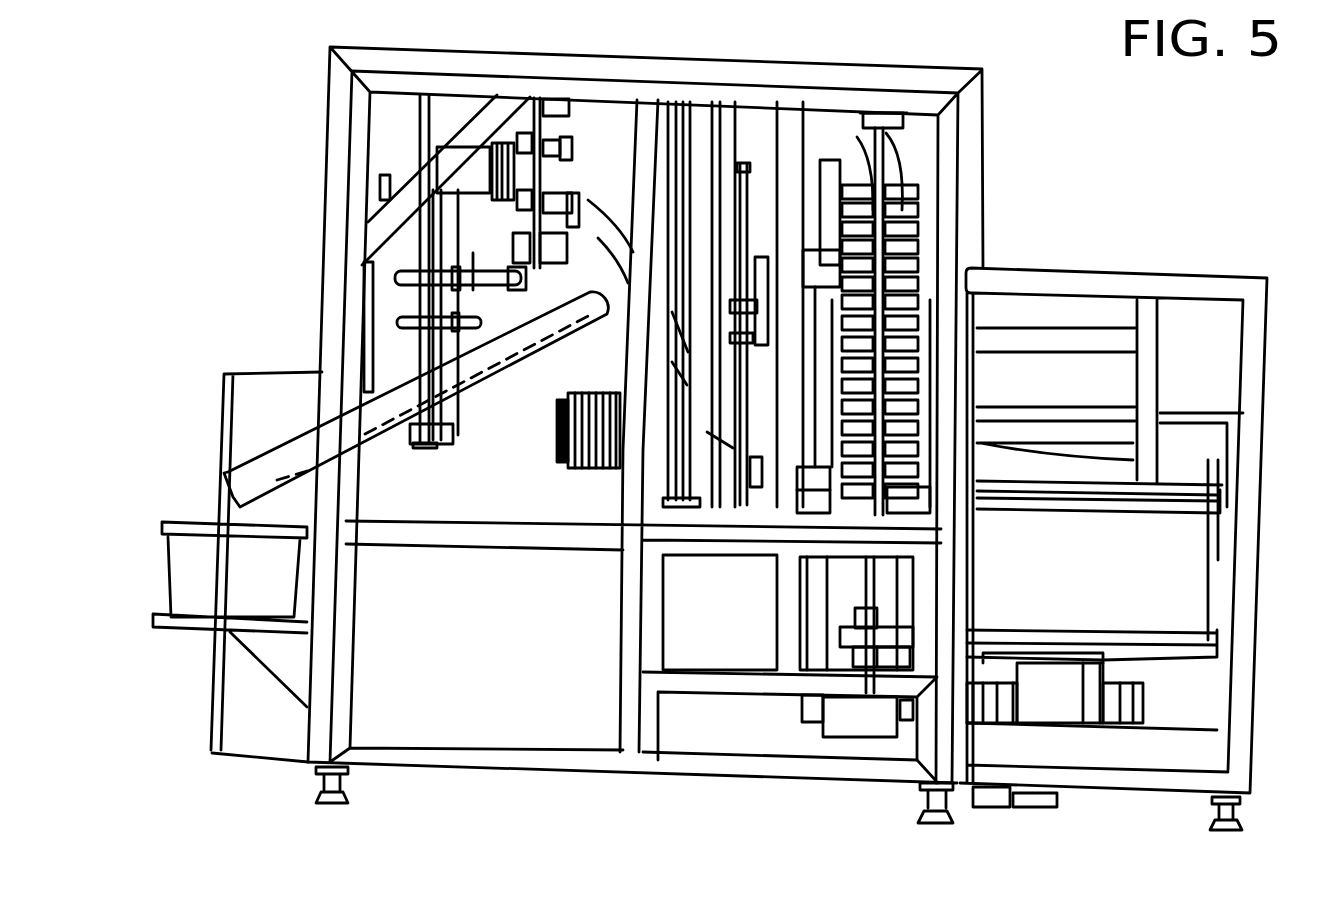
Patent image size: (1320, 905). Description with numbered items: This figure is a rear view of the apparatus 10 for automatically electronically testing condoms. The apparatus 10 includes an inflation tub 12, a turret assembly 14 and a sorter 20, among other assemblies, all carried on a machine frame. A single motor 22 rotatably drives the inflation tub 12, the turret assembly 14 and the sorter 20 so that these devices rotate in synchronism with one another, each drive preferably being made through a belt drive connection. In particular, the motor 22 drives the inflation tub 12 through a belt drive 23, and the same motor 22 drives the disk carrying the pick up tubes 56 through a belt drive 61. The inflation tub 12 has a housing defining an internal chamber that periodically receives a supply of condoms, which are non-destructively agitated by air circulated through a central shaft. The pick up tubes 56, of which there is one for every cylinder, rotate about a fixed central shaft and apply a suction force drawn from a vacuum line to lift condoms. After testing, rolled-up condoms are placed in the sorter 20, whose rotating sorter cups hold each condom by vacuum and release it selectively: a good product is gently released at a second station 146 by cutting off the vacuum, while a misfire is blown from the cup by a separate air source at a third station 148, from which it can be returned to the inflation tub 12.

The apparatus 10 is at (867, 56).
The inflation tub 12 is at (1197, 577).
The turret assembly 14 is at (935, 202).
The sorter 20 is at (558, 181).
The motor 22 is at (1113, 710).
The belt drive 23 is at (1050, 640).
The pick up tube 56 is at (873, 137).
The belt drive 61 is at (817, 626).
The second station 146 is at (586, 298).
The third station 148 is at (604, 197).